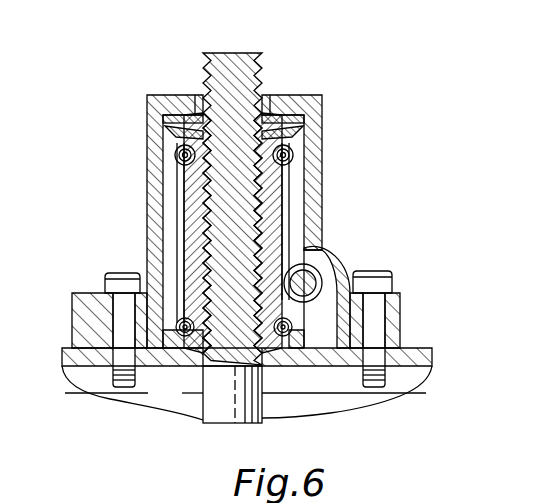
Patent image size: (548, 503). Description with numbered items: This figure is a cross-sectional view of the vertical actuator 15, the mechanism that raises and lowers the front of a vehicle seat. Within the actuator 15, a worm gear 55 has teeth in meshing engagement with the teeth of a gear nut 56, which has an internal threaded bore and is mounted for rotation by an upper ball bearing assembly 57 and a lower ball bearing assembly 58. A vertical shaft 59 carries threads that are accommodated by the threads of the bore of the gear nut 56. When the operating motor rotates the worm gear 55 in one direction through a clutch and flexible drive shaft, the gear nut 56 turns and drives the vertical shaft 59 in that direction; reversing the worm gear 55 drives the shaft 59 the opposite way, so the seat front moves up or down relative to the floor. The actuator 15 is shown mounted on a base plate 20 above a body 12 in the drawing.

The housing body 12 is at (358, 403).
The vertical actuator 15 is at (145, 128).
The base plate 20 is at (406, 348).
The worm gear 55 is at (295, 287).
The gear nut 56 is at (273, 213).
The upper ball bearing assembly 57 is at (293, 138).
The lower ball bearing assembly 58 is at (172, 350).
The vertical shaft 59 is at (234, 93).